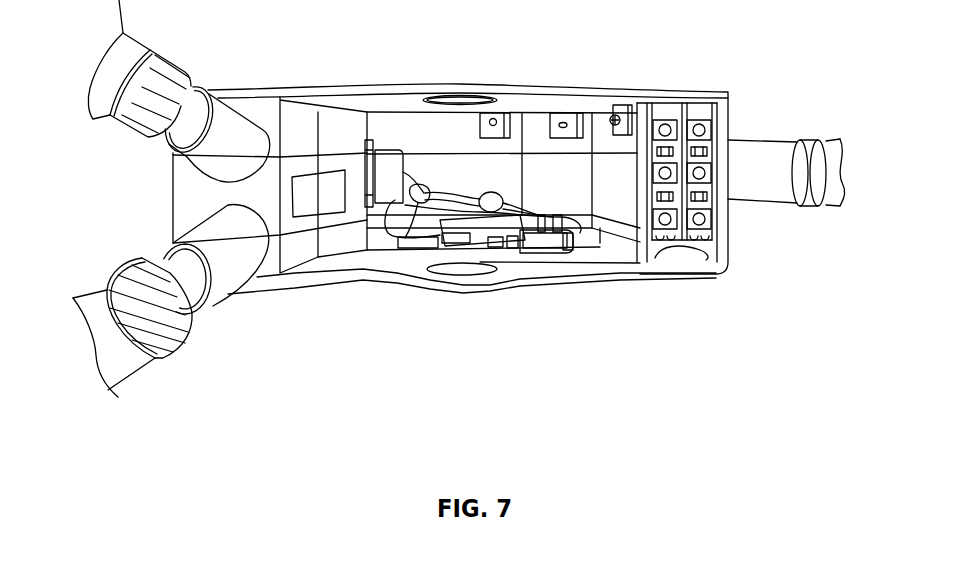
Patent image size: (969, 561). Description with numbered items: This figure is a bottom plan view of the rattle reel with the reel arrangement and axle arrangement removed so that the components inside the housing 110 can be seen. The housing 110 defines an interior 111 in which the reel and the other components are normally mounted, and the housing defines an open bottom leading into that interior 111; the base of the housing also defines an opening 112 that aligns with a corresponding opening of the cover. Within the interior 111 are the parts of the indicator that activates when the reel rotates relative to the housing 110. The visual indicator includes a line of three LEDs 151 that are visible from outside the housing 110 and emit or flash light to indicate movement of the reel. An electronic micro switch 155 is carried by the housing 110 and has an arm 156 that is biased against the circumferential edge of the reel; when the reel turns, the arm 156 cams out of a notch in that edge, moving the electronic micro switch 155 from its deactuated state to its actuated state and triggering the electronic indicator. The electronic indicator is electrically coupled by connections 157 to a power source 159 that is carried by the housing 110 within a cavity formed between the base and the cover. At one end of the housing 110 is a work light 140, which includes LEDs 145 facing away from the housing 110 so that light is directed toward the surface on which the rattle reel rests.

The housing 110 is at (627, 100).
The interior 111 is at (388, 253).
The opening 112 is at (463, 273).
The work light 140 is at (712, 140).
The LED 145 is at (710, 220).
The LED 151 is at (410, 250).
The electronic micro switch 155 is at (560, 250).
The arm 156 is at (508, 248).
The connections 157 is at (430, 243).
The power source 159 is at (310, 187).